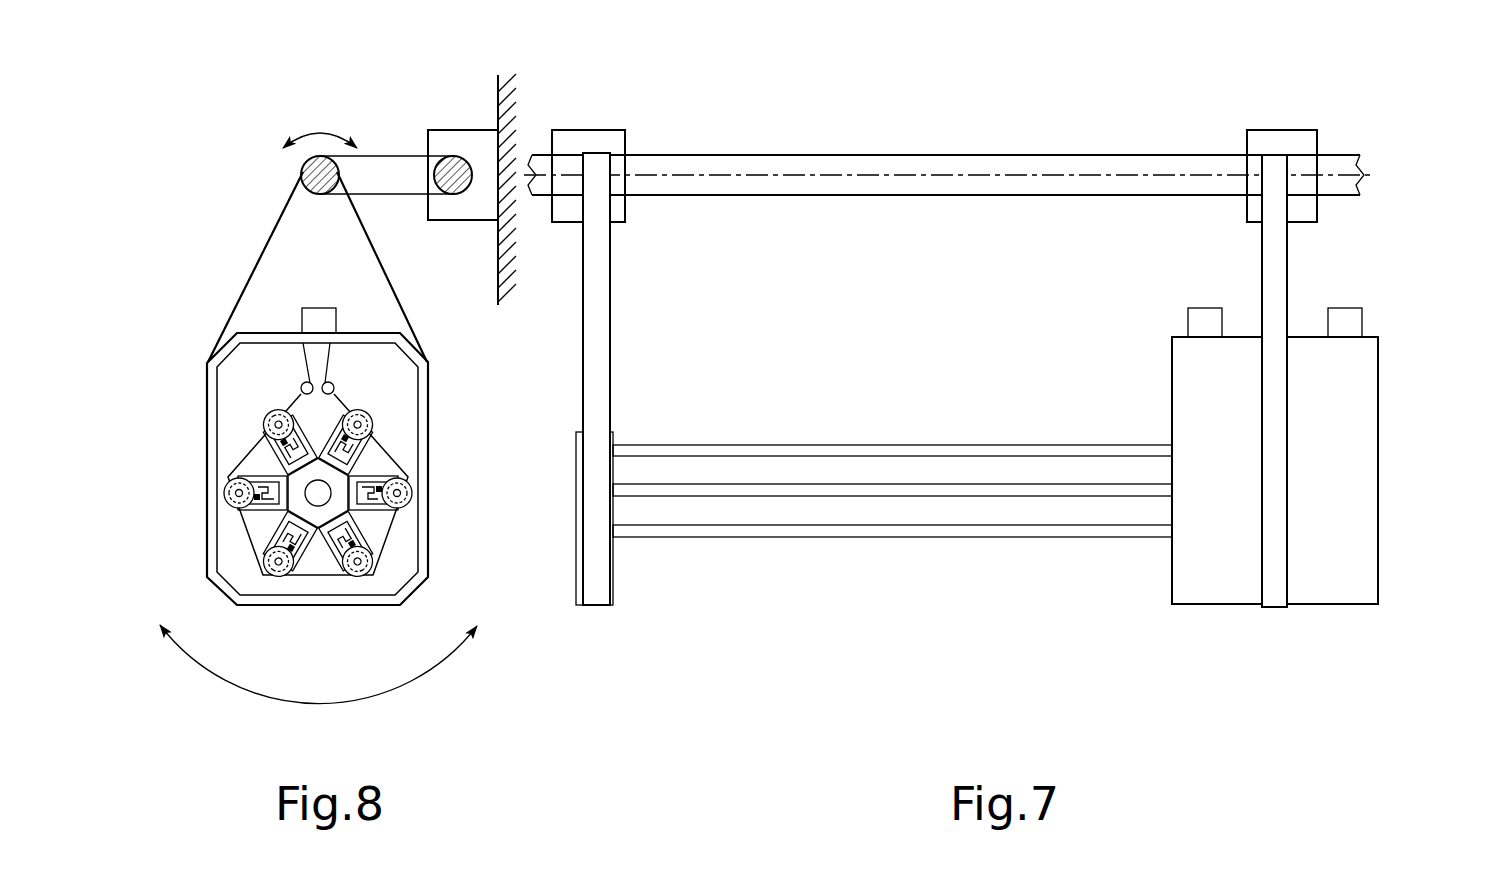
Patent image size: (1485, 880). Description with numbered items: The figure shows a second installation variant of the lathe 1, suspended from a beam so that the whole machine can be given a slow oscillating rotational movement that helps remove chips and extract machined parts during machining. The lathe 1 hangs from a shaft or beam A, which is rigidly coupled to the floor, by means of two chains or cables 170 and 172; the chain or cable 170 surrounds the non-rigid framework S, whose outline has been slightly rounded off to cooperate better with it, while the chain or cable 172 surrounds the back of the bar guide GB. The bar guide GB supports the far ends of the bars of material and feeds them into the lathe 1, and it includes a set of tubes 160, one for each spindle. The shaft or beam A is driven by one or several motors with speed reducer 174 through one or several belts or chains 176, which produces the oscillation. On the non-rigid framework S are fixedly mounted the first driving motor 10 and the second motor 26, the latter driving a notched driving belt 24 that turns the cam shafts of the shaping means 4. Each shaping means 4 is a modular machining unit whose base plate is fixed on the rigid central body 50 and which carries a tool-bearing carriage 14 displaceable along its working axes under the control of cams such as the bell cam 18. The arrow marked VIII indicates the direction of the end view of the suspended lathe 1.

In FIG. 8, the lathe 1 is at (246, 148).
In FIG. 7, the lathe 1 is at (1006, 118).
In FIG. 8, the shaping means 4 is at (378, 453).
In FIG. 7, the first driving motor 10 is at (1210, 320).
In FIG. 8, the tool-bearing carriage 14 is at (372, 508).
In FIG. 8, the bell cam 18 is at (408, 503).
In FIG. 8, the notched driving belt 24 is at (332, 358).
In FIG. 8, the second motor 26 is at (315, 322).
In FIG. 7, the second motor 26 is at (1345, 325).
In FIG. 8, the rigid central body 50 is at (318, 517).
In FIG. 7, the tubes 160 is at (775, 573).
In FIG. 8, the chain or cable 170 is at (288, 267).
In FIG. 7, the chain or cable 170 is at (1277, 243).
In FIG. 8, the chain or cable 172 is at (382, 267).
In FIG. 7, the chain or cable 172 is at (597, 333).
In FIG. 8, the motor with speed reducer 174 is at (445, 210).
In FIG. 7, the motor with speed reducer 174 is at (598, 130).
In FIG. 8, the belt or chain 176 is at (392, 156).
In FIG. 8, the shaft or beam A is at (313, 195).
In FIG. 7, the shaft or beam A is at (852, 165).
In FIG. 8, the non-rigid framework S is at (420, 415).
In FIG. 7, the non-rigid framework S is at (1323, 555).
In FIG. 7, the bar guide GB is at (892, 522).
In FIG. 7, the view direction VIII is at (1404, 420).